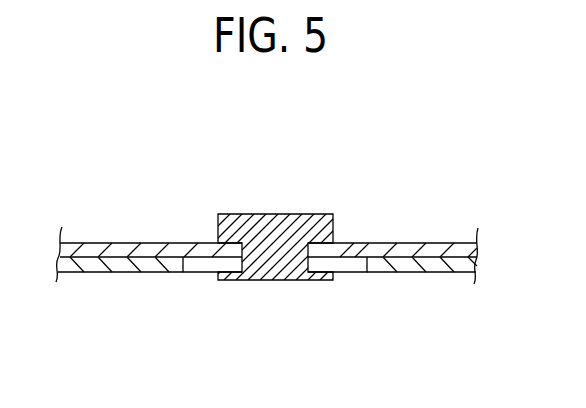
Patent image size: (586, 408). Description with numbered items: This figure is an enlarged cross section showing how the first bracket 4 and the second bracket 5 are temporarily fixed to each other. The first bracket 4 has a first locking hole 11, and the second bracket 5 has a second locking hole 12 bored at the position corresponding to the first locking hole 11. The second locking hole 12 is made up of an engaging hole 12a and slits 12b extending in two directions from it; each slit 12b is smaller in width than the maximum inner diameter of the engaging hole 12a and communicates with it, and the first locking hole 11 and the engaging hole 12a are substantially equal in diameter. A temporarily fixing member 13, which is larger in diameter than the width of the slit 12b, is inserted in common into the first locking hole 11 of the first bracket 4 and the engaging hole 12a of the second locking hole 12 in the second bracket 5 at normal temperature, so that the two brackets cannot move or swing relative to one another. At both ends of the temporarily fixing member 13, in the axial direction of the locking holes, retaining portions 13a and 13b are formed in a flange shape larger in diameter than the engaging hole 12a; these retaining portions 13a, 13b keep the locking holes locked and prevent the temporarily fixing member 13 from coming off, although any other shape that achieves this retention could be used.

The first bracket 4 is at (412, 243).
The second bracket 5 is at (90, 272).
The first locking hole 11 is at (255, 280).
The second locking hole 12 is at (235, 281).
The engaging hole 12a is at (302, 214).
The slit 12b is at (207, 272).
The temporarily fixing member 13 is at (248, 216).
The retaining portion 13a is at (216, 214).
The retaining portion 13b is at (318, 280).